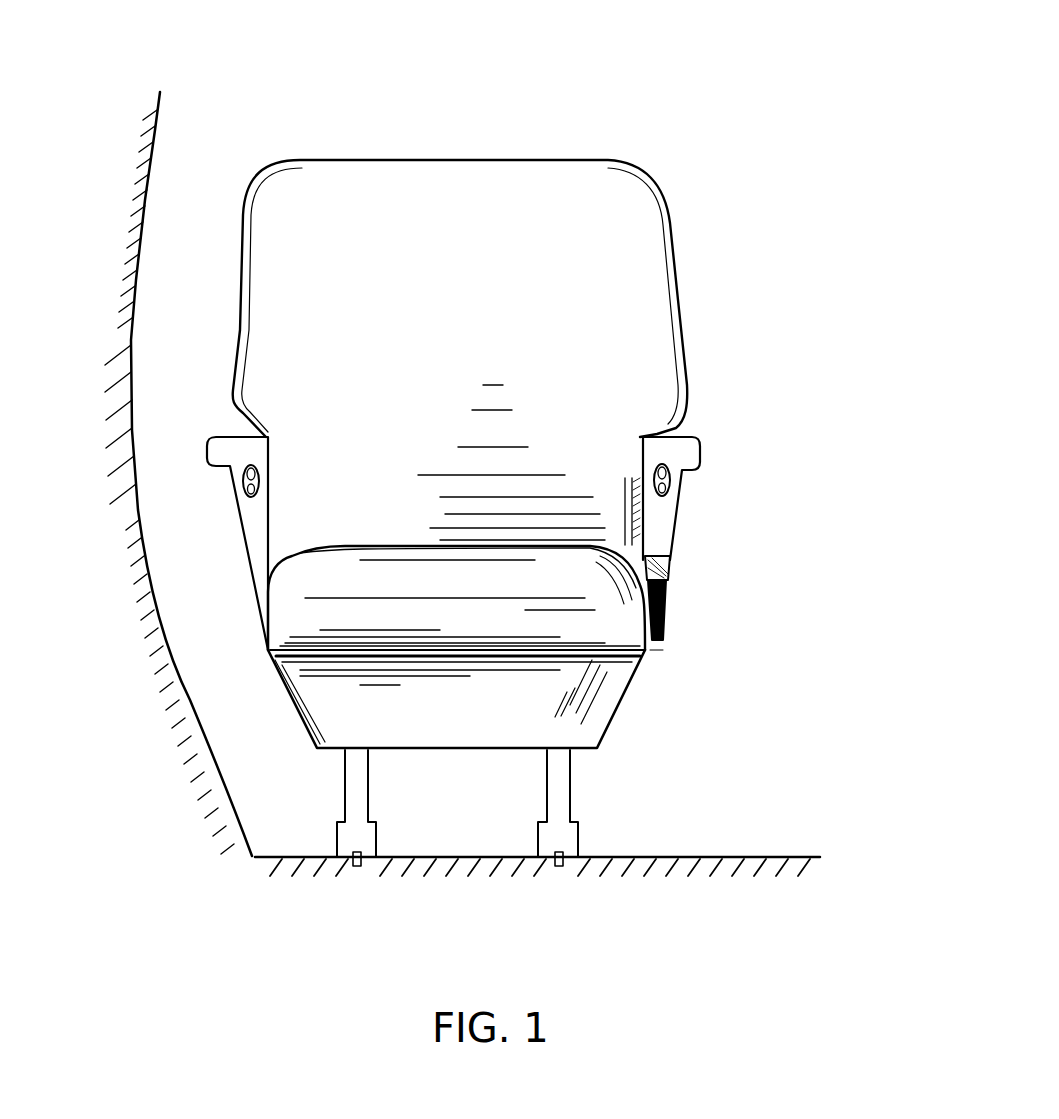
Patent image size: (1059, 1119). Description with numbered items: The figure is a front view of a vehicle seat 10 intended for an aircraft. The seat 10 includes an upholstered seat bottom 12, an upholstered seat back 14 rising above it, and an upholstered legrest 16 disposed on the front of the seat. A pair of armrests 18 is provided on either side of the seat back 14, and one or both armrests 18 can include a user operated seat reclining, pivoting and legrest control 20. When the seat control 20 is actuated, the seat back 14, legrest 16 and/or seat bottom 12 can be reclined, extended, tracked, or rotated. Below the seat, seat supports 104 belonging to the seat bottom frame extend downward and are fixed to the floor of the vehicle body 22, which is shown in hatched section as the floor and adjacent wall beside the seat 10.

The vehicle seat 10 is at (720, 89).
The upholstered seat bottom 12 is at (620, 607).
The upholstered seat back 14 is at (610, 298).
The upholstered legrest 16 is at (562, 694).
The armrests 18 is at (218, 467).
The seat reclining/pivoting/legrest control 20 is at (250, 478).
The vehicle body 22 is at (117, 440).
The seat supports 104 is at (560, 792).